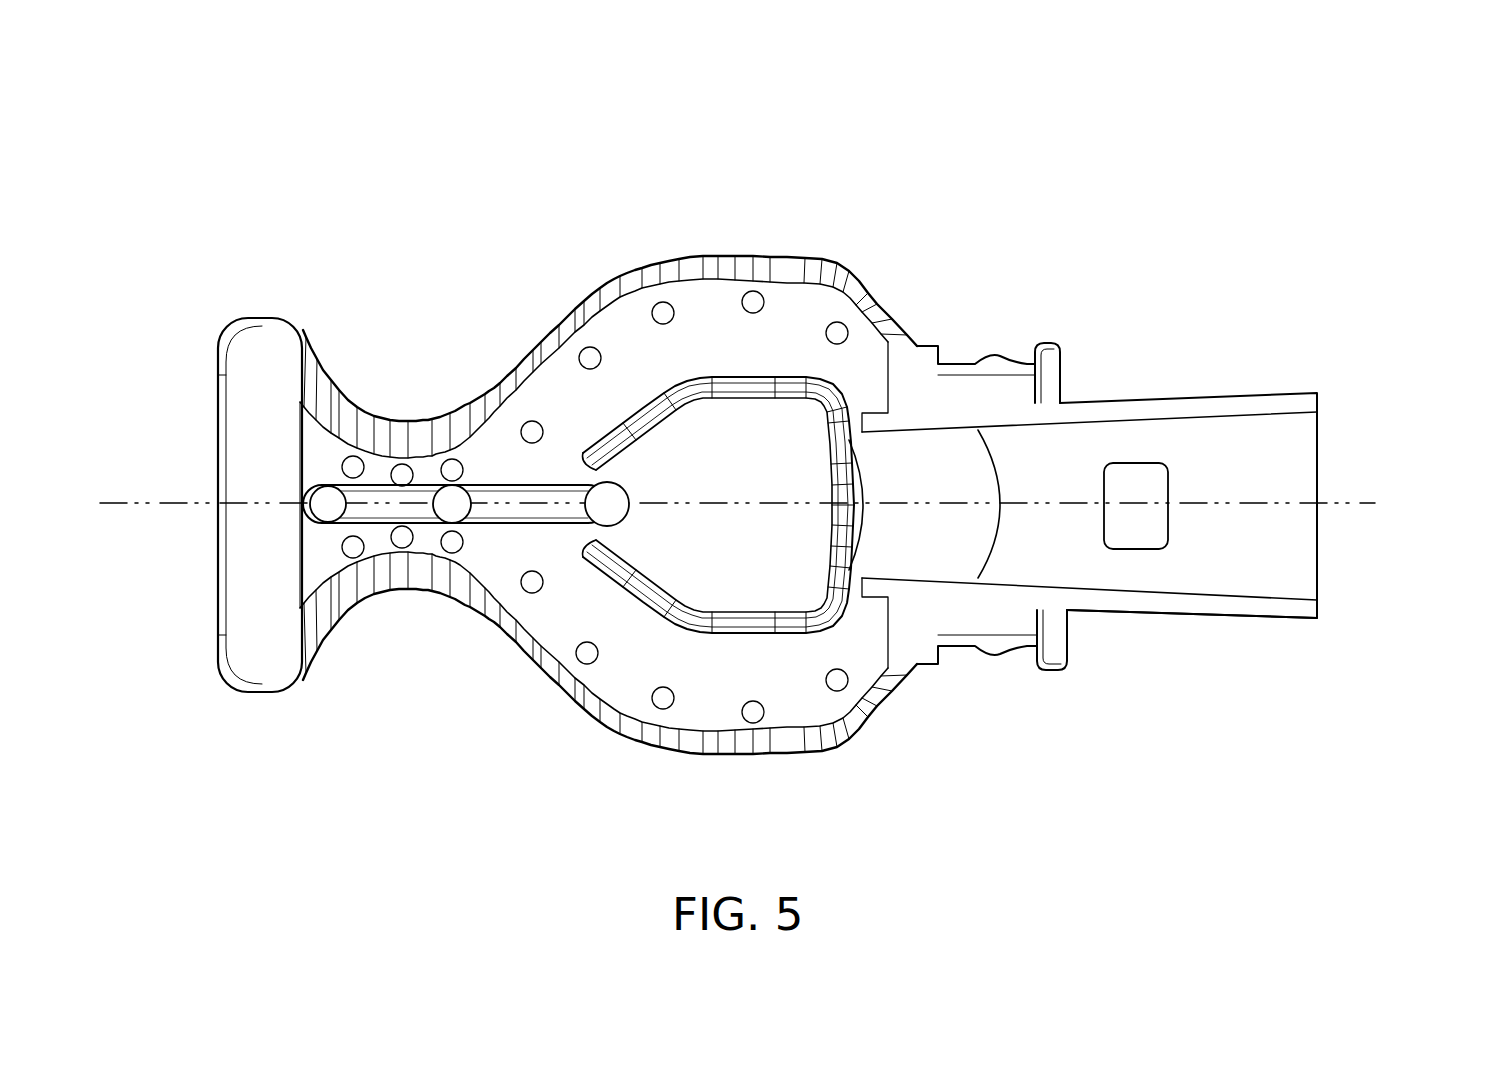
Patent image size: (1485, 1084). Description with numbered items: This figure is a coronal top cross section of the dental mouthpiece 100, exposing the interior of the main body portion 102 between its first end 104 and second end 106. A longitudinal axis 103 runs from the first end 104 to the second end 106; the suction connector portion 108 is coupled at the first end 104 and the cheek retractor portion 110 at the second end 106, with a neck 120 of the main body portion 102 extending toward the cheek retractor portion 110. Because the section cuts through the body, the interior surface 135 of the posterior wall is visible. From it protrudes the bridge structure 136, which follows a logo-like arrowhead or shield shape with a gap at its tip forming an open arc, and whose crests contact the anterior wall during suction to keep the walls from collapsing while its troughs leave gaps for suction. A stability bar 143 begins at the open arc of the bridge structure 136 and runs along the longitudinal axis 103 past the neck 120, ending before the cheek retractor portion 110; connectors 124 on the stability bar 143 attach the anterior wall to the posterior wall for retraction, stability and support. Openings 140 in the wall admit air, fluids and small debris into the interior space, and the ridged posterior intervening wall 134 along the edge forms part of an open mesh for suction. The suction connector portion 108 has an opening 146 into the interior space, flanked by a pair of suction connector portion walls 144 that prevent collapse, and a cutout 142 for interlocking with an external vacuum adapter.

The dental mouthpiece 100 is at (316, 147).
The main body portion 102 is at (586, 218).
The longitudinal axis 103 is at (1385, 505).
The first end 104 is at (1042, 838).
The second end 106 is at (508, 748).
The suction connector portion 108 is at (1170, 612).
The cheek retractor portion 110 is at (246, 316).
The neck 120 is at (392, 342).
The connector 124 is at (597, 521).
The posterior intervening wall 134 is at (853, 728).
The interior surface 135 is at (627, 680).
The bridge structure 136 is at (622, 412).
The openings 140 is at (668, 710).
The cutout 142 is at (1164, 550).
The stability bar 143 is at (352, 478).
The suction connector portion wall 144 is at (888, 335).
The opening 146 is at (878, 501).